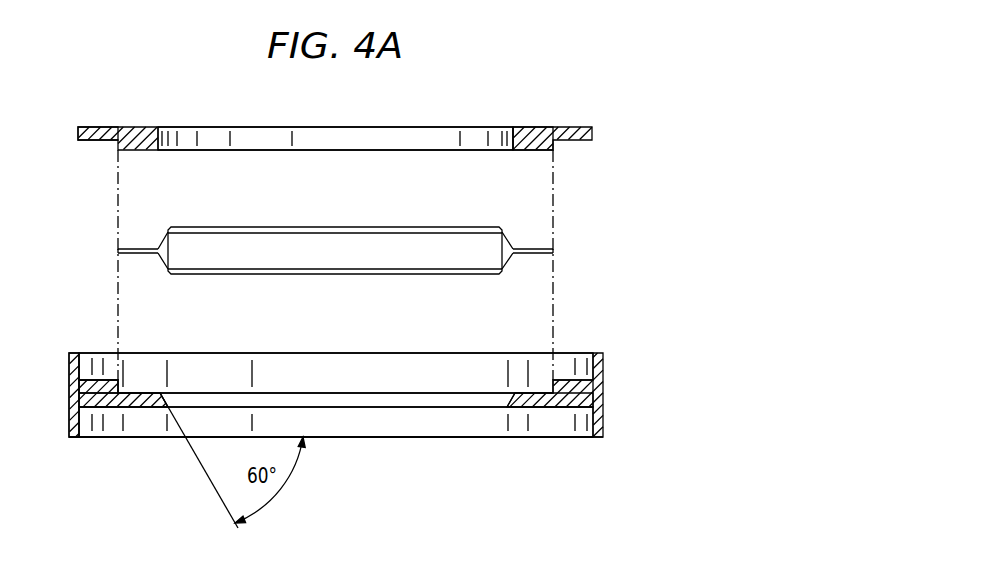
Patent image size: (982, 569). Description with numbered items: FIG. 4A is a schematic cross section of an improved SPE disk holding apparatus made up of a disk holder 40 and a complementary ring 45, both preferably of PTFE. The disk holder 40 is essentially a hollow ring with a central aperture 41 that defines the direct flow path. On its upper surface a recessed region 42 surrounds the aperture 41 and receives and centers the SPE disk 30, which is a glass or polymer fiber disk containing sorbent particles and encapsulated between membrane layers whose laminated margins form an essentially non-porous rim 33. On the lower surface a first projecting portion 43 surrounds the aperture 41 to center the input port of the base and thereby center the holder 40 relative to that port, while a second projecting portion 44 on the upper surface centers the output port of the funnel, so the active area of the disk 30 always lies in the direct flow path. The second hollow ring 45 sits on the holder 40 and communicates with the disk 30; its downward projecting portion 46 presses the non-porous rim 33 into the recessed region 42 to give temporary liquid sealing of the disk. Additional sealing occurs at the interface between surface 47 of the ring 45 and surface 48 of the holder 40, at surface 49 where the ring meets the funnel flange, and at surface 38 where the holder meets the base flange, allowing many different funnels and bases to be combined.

The SPE disk 30 is at (278, 252).
The non-porous rim 33 is at (132, 253).
The sealing surface 38 is at (116, 408).
The disk holder 40 is at (603, 353).
The aperture 41 is at (336, 365).
The recessed region 42 is at (155, 393).
The first projecting portion 43 is at (603, 437).
The second projecting portion 44 is at (76, 353).
The ring 45 is at (592, 134).
The downward projecting portion 46 is at (528, 150).
The sealing surface 47 is at (98, 140).
The sealing surface 48 is at (112, 380).
The sealing surface 49 is at (122, 127).